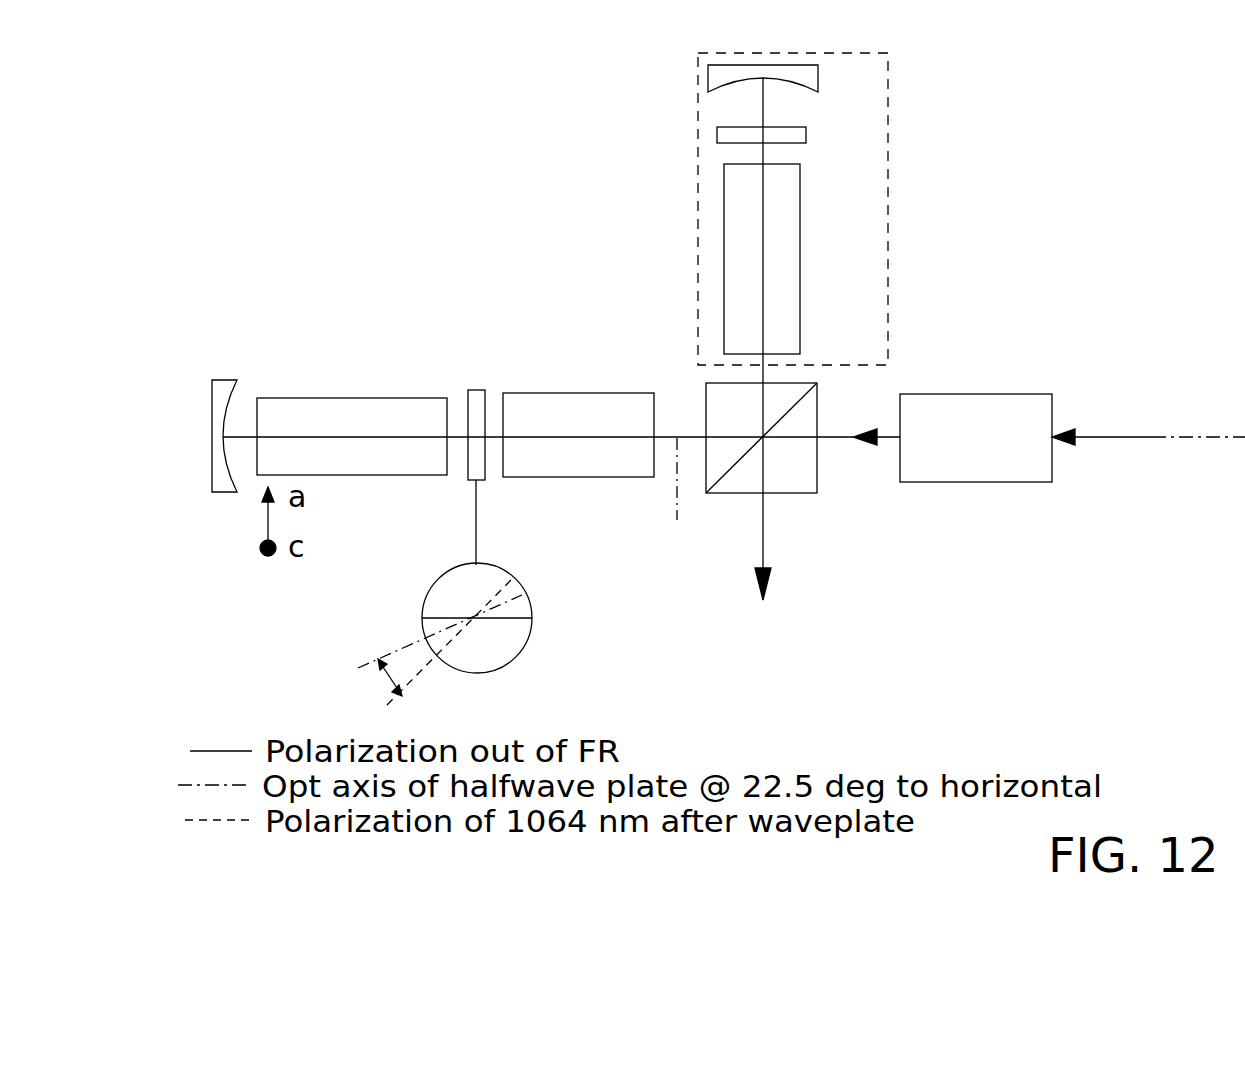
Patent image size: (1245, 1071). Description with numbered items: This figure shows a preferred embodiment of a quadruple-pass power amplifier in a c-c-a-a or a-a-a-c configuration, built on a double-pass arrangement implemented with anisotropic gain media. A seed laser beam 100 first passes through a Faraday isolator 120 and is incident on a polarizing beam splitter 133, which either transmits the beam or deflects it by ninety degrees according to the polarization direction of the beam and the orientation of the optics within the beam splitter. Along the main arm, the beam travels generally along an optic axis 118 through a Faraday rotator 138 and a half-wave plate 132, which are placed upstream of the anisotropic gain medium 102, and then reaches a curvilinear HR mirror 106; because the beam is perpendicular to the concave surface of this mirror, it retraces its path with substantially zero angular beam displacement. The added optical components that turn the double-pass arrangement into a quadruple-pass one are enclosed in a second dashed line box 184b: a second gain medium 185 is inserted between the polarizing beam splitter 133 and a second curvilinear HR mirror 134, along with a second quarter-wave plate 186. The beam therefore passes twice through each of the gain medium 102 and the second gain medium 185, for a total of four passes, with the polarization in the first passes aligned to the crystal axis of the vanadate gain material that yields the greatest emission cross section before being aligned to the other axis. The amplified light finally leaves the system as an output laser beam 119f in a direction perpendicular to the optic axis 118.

The seed laser beam 100 is at (1097, 440).
The anisotropic gain medium 102 is at (343, 410).
The curvilinear HR mirror 106 is at (223, 400).
The optic axis 118 is at (1218, 482).
The output laser beam 119f is at (765, 542).
The Faraday isolator 120 is at (963, 400).
The half-wave plate 132 is at (470, 398).
The polarizing beam splitter 133 is at (805, 417).
The second curvilinear HR mirror 134 is at (792, 72).
The Faraday rotator 138 is at (565, 397).
The second dashed line box 184b is at (893, 106).
The second gain medium 185 is at (793, 217).
The second quarter-wave plate 186 is at (797, 143).